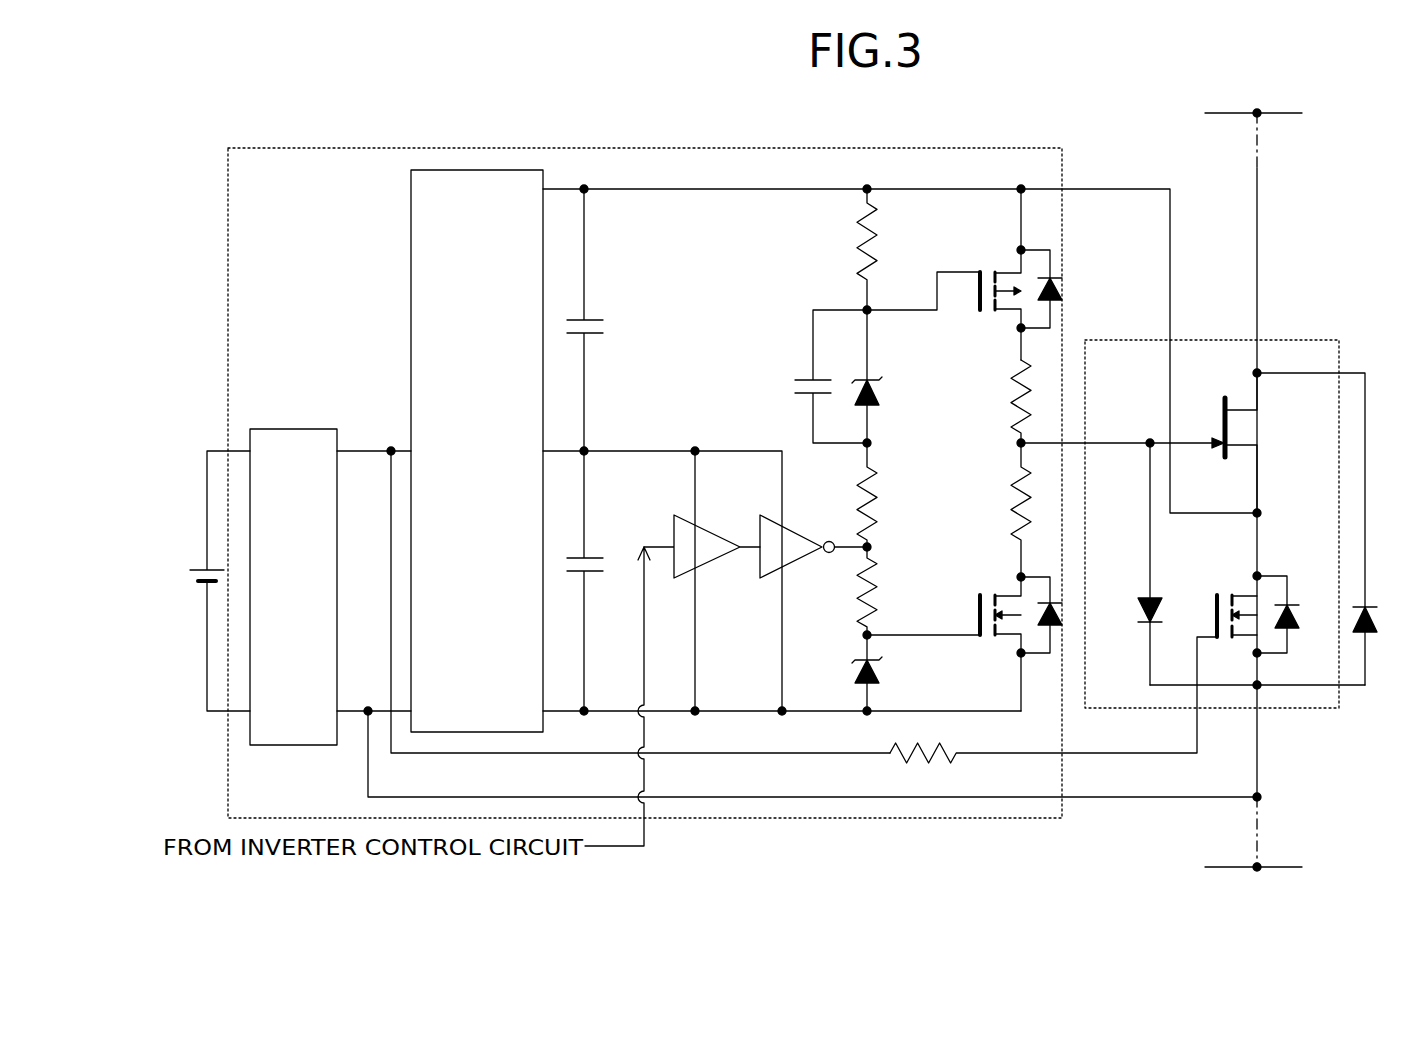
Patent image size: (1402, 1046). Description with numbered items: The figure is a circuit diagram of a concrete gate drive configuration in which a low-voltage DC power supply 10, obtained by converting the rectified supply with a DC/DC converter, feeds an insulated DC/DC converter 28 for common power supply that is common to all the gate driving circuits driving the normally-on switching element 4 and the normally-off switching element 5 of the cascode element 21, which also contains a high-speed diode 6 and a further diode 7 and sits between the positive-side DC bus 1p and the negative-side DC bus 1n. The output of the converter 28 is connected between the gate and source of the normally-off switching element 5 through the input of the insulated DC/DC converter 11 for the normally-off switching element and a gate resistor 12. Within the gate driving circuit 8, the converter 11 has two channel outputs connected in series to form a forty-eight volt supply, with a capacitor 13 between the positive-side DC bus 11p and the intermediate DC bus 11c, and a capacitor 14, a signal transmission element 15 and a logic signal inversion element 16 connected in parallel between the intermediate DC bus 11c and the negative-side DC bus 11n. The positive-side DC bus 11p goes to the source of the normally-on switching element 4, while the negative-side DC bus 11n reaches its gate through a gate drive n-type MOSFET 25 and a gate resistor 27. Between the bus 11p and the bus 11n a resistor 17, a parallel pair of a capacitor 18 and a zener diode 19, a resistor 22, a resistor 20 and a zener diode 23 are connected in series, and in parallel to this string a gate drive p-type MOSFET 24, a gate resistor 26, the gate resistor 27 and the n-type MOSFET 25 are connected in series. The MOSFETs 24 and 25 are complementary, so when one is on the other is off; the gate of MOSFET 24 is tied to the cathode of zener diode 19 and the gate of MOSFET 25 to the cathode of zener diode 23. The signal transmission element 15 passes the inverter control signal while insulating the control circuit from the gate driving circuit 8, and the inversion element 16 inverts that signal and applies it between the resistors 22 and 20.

The positive-side DC bus 1p is at (1270, 113).
The negative-side DC bus 1n is at (1270, 867).
The normally-on switching element 4 is at (1226, 392).
The normally-off switching element 5 is at (1218, 582).
The high-speed diode 6 is at (1352, 602).
The diode 7 is at (1138, 596).
The gate driving circuit 8 is at (418, 148).
The low-voltage DC power supply 10 is at (207, 564).
The insulated DC/DC converter for normally-off switching element 11 is at (411, 290).
The positive-side DC bus 11p is at (560, 190).
The intermediate DC bus 11c is at (560, 451).
The negative-side DC bus 11n is at (560, 711).
The gate resistor 12 is at (950, 752).
The capacitor 13 is at (592, 318).
The capacitor 14 is at (596, 557).
The signal transmission element 15 is at (674, 517).
The logic signal inversion element 16 is at (760, 517).
The resistor 17 is at (856, 246).
The capacitor 18 is at (792, 386).
The zener diode 19 is at (872, 380).
The resistor 20 is at (858, 592).
The cascode element 21 is at (1285, 340).
The resistor 22 is at (858, 505).
The zener diode 23 is at (858, 670).
The gate drive p-type MOSFET 24 is at (986, 260).
The gate drive n-type MOSFET 25 is at (986, 590).
The gate resistor 26 is at (1010, 398).
The gate resistor 27 is at (1010, 509).
The insulated DC/DC converter for common power supply 28 is at (288, 429).